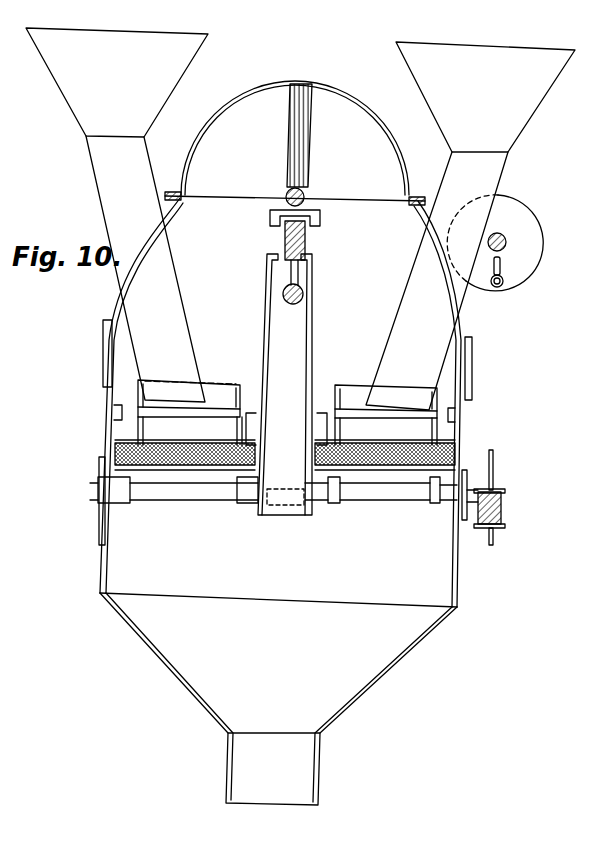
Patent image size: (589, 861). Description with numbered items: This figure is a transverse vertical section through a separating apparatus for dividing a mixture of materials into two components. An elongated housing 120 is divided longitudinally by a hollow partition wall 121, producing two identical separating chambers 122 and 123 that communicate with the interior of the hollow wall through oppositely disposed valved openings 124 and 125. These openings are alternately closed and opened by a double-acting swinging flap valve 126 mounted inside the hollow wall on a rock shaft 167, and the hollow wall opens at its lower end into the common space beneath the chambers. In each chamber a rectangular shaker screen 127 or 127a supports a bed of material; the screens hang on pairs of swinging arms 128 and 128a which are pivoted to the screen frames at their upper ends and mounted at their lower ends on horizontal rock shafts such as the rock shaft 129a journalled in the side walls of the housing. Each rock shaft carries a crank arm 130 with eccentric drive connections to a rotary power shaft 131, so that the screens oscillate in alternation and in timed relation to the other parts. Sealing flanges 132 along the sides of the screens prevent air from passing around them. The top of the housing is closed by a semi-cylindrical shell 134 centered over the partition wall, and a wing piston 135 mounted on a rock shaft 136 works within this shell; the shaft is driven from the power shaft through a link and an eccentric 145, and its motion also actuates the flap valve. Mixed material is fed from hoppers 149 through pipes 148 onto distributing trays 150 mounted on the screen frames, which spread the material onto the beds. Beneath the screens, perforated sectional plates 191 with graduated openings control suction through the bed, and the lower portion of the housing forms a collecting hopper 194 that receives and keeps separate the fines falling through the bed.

The elongated housing 120 is at (118, 299).
The hollow partition wall 121 is at (318, 325).
The separating chamber 122 is at (386, 395).
The separating chamber 123 is at (190, 393).
The valved opening 124 is at (316, 244).
The valved opening 125 is at (268, 240).
The double-acting swinging flap valve 126 is at (306, 236).
The shaker screen 127 is at (365, 465).
The shaker screen 127a is at (160, 465).
The swinging arms 128 is at (342, 490).
The swinging arms 128a is at (142, 490).
The horizontal rock shaft 129a is at (405, 508).
The crank arm 130 is at (503, 506).
The rotary power shaft 131 is at (502, 236).
The sealing flanges 132 is at (113, 412).
The semi-cylindrical shell 134 is at (270, 85).
The wing piston 135 is at (311, 128).
The rock shaft 136 is at (304, 192).
The eccentric 145 is at (502, 287).
The pipes 148 is at (100, 196).
The hoppers 149 is at (190, 52).
The distributing trays 150 is at (223, 407).
The rock shaft 167 is at (287, 304).
The perforated sectional plates 191 is at (212, 470).
The collecting hopper 194 is at (395, 662).